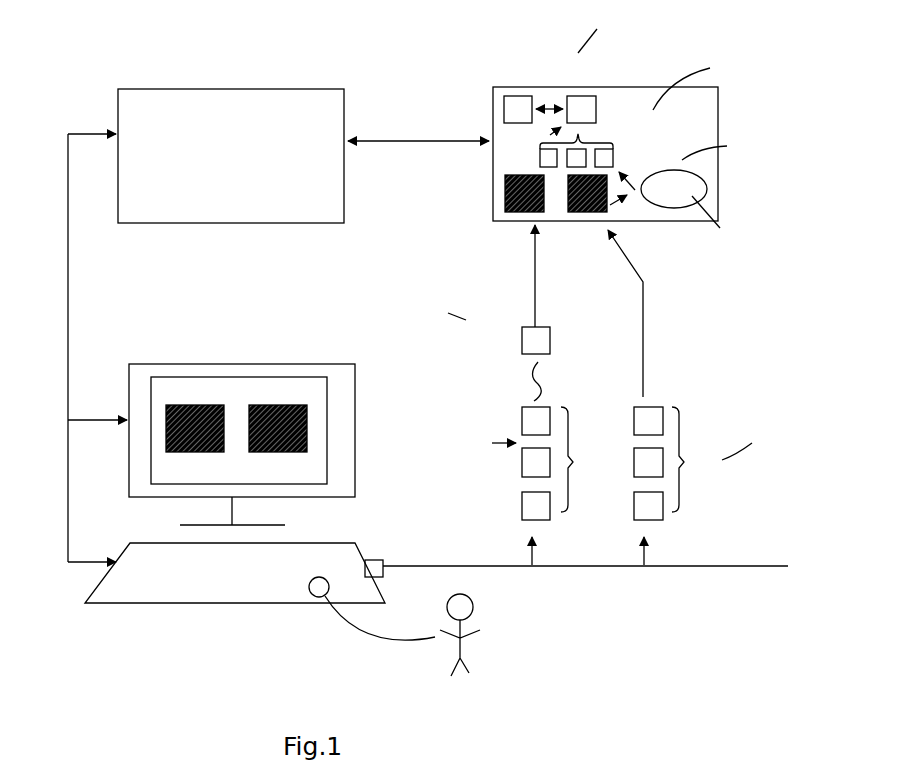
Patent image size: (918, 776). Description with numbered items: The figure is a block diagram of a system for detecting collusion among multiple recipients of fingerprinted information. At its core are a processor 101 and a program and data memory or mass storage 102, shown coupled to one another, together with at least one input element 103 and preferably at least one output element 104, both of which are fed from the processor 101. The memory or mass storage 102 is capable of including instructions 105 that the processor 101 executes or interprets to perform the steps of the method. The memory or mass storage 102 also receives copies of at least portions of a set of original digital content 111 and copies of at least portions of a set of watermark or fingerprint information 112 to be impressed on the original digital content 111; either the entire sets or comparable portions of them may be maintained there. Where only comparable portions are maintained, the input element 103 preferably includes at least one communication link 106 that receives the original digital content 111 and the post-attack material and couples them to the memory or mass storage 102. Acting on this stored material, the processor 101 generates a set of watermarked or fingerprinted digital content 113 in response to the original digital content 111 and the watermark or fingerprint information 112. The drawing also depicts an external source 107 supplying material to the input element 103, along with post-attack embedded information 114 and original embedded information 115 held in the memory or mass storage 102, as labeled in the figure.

The processor 101 is at (231, 156).
The memory or mass storage 102 is at (632, 154).
The input element 103 is at (108, 608).
The output element 104 is at (197, 358).
The instructions 105 is at (635, 209).
The communication link 106 is at (742, 566).
The external source 107 is at (517, 649).
The original digital content 111 is at (532, 463).
The watermark or fingerprint information 112 is at (703, 463).
The watermarked or fingerprinted digital content 113 is at (605, 136).
The post-attack embedded information 114 is at (597, 71).
The original embedded information 115 is at (522, 91).